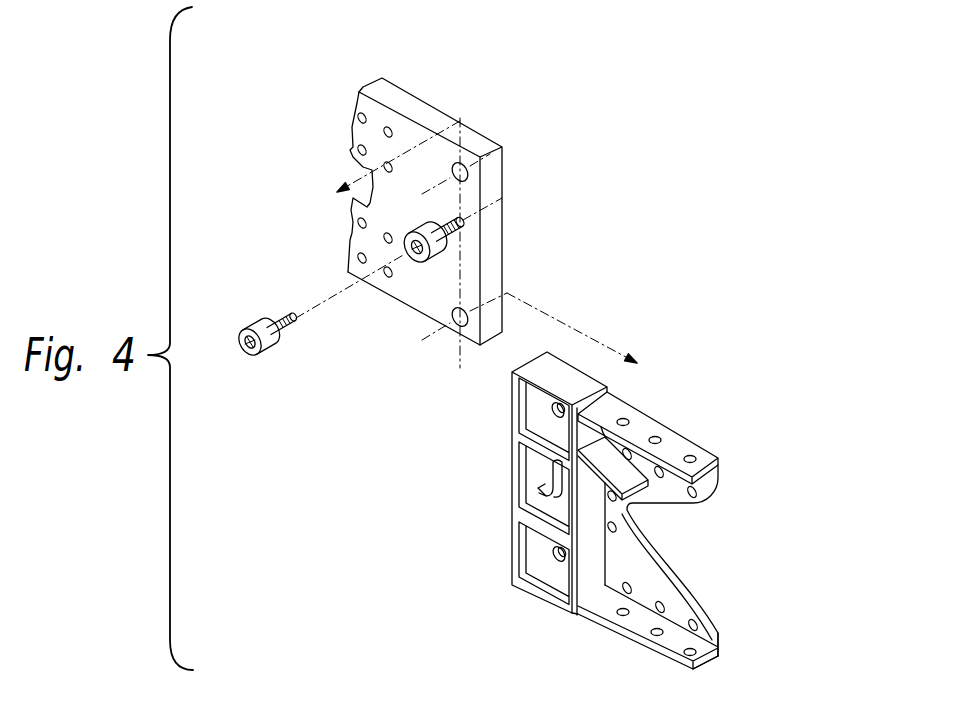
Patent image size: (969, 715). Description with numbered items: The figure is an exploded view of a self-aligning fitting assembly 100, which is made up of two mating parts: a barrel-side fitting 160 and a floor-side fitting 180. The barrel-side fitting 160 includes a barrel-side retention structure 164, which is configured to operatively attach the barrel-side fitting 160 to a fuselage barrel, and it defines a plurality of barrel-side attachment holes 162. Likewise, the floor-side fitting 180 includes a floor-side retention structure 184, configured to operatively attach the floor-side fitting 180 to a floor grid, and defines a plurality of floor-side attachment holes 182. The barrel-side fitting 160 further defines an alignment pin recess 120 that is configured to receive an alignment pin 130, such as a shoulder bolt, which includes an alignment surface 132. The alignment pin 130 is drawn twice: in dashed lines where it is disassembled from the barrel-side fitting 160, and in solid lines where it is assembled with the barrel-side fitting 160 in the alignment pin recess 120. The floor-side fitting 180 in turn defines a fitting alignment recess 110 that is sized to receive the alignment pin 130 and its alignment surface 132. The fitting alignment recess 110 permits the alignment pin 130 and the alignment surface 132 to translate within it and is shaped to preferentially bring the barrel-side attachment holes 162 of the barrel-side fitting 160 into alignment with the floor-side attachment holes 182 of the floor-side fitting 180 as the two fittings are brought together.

The self-aligning fitting assembly 100 is at (710, 138).
The fitting alignment recess 110 is at (543, 498).
The alignment pin recess 120 is at (465, 227).
The alignment pin 130 is at (257, 313).
The alignment surface 132 is at (268, 331).
The barrel-side fitting 160 is at (353, 63).
The barrel-side attachment holes 162 is at (448, 157).
The barrel-side retention structure 164 is at (350, 90).
The floor-side fitting 180 is at (690, 404).
The floor-side attachment holes 182 is at (554, 406).
The floor-side retention structure 184 is at (718, 667).